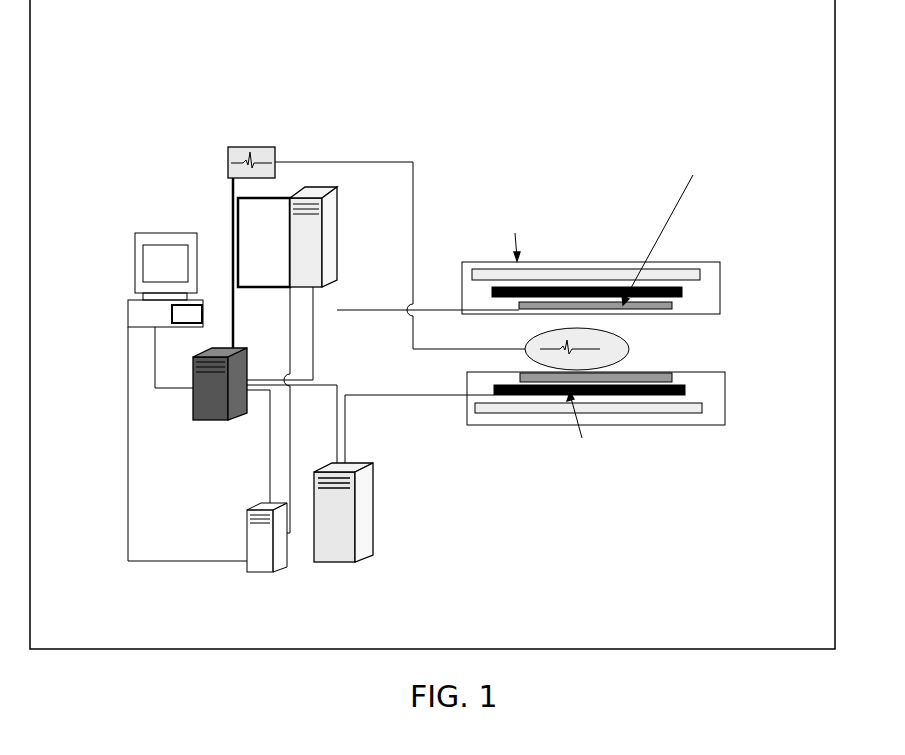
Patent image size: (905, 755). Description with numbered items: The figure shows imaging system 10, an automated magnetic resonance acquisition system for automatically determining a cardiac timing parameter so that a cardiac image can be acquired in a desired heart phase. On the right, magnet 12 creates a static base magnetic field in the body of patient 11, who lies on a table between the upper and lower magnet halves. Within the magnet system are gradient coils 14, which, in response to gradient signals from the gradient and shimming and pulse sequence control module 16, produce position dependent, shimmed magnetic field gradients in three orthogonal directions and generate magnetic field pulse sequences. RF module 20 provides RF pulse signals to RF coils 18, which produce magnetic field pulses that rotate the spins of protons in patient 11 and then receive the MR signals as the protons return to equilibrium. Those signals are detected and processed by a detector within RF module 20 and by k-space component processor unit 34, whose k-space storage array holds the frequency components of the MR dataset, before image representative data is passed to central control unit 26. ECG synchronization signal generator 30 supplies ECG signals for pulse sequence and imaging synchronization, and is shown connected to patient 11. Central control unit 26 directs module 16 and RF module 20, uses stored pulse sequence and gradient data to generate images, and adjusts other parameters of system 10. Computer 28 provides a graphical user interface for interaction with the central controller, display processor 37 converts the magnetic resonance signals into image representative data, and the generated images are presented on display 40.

The imaging system 10 is at (427, 43).
The patient 11 is at (610, 355).
The magnet 12 is at (658, 272).
The gradient coils 14 is at (682, 292).
The gradient and shimming and pulse sequence control module 16 is at (362, 483).
The RF coils 18 is at (672, 306).
The RF module 20 is at (337, 197).
The central control unit 26 is at (215, 400).
The computer 28 is at (128, 303).
The ECG synchronization signal generator 30 is at (228, 167).
The k-space component processor unit 34 is at (238, 235).
The display processor 37 is at (187, 318).
The display 40 is at (162, 257).